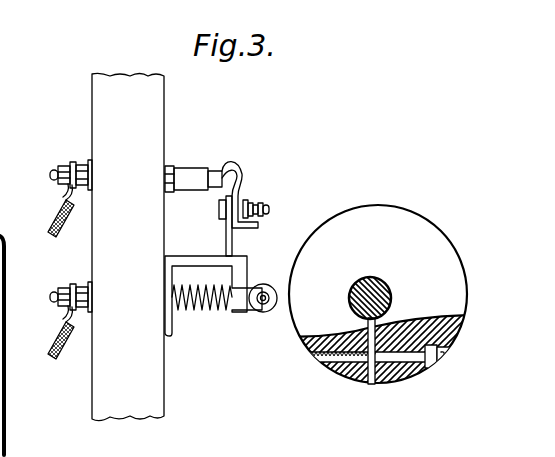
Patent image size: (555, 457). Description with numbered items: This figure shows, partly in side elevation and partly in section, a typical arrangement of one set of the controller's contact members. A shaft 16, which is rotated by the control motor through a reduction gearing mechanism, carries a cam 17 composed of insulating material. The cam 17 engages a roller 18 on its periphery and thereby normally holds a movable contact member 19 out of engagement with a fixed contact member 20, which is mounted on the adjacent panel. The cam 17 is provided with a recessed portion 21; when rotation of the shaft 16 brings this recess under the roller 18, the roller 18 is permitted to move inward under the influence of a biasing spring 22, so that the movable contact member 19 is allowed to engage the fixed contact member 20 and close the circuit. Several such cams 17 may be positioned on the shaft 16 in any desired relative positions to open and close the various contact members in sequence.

The shaft 16 is at (392, 290).
The cam 17 is at (424, 231).
The roller 18 is at (268, 316).
The movable contact member 19 is at (226, 232).
The fixed contact member 20 is at (213, 168).
The recessed portion 21 is at (293, 262).
The biasing spring 22 is at (205, 302).